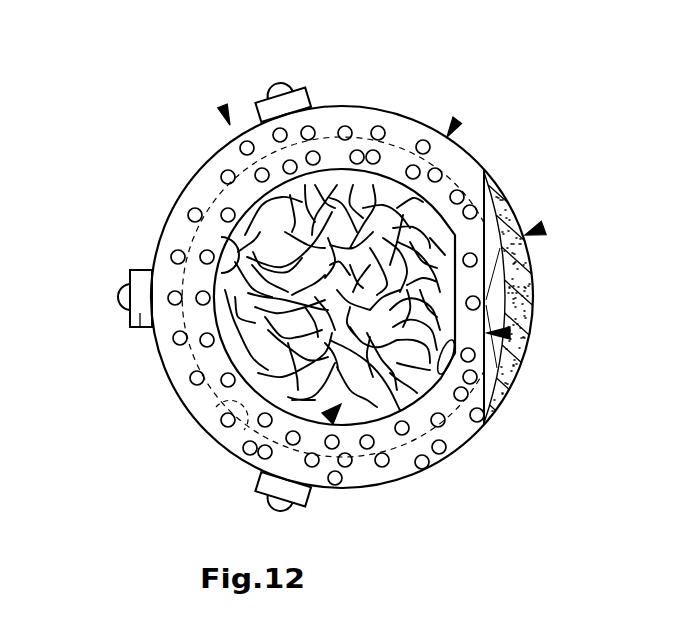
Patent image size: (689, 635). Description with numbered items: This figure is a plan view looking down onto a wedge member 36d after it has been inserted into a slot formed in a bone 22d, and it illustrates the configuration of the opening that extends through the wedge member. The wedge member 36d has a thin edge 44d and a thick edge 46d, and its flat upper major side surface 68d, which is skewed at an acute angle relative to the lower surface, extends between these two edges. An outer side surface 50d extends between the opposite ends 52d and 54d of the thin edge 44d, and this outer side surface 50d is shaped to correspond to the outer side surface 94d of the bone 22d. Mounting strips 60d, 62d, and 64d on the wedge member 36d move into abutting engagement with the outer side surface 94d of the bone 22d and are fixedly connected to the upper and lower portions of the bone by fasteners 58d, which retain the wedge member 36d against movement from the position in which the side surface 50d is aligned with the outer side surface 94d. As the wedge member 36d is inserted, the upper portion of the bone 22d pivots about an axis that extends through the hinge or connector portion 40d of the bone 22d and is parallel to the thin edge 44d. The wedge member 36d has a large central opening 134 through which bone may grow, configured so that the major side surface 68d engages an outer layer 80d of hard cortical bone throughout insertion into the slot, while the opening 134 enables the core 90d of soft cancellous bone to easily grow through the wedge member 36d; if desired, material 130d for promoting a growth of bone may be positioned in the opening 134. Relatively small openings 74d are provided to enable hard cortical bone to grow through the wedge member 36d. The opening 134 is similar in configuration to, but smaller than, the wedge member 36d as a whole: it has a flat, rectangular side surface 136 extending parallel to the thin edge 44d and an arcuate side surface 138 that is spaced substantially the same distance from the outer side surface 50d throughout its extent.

The bone 22d is at (542, 228).
The wedge member 36d is at (222, 106).
The hinge or connector portion 40d is at (505, 302).
The thin edge 44d is at (510, 333).
The thick edge 46d is at (184, 190).
The outer side surface 50d is at (410, 120).
The end of thin edge 52d is at (484, 170).
The end of thin edge 54d is at (488, 423).
The fasteners 58d is at (277, 82).
The mounting strip 60d is at (297, 100).
The mounting strip 62d is at (143, 330).
The mounting strip 64d is at (310, 492).
The upper major side surface 68d is at (368, 475).
The small openings 74d is at (227, 380).
The outer layer of hard cortical bone 80d is at (495, 197).
The core of soft cancellous bone 90d is at (495, 282).
The outer side surface of bone 94d is at (505, 402).
The material for promoting growth of bone 130d is at (277, 238).
The large central opening 134 is at (366, 402).
The flat, rectangular side surface 136 is at (440, 370).
The arcuate side surface 138 is at (220, 236).